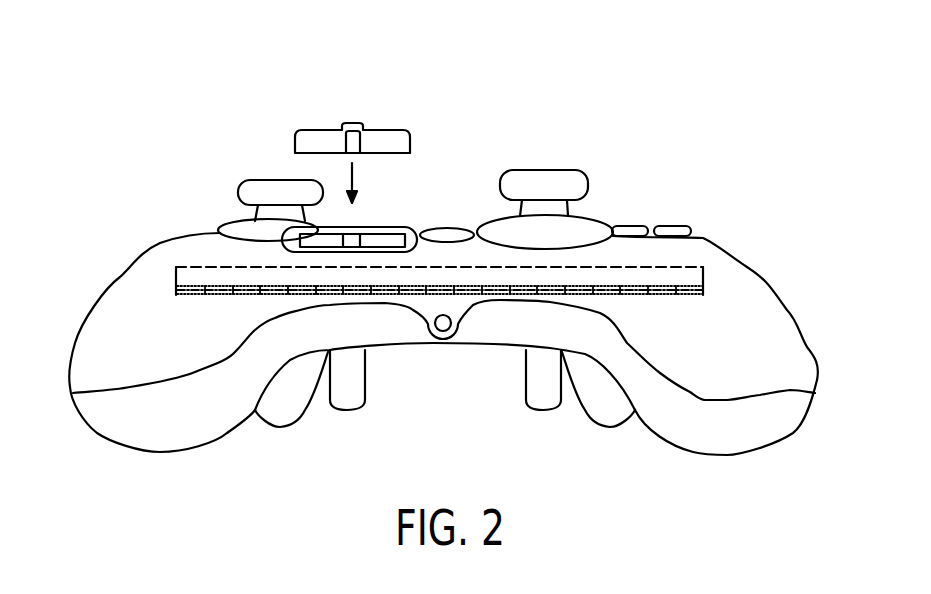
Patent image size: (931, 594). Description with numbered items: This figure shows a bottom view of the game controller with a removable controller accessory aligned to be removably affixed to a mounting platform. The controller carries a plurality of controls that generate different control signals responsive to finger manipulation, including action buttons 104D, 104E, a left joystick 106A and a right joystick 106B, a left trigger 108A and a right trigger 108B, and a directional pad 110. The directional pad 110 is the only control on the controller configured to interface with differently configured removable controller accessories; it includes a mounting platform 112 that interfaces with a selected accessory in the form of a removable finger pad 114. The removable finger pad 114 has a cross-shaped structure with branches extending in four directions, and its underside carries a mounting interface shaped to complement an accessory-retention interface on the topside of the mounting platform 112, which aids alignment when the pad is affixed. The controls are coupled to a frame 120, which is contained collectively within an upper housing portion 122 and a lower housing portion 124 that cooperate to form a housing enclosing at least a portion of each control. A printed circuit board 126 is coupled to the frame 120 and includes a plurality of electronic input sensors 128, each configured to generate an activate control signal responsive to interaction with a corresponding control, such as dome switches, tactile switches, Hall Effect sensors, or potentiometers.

The directional pad 110 is at (432, 138).
The action button 104D is at (624, 227).
The action button 104E is at (678, 227).
The left joystick 106A is at (280, 180).
The right joystick 106B is at (553, 170).
The left trigger 108A is at (343, 412).
The right trigger 108B is at (535, 412).
The mounting platform 112 is at (282, 236).
The removable finger pad 114 is at (312, 128).
The frame 120 is at (176, 272).
The upper housing portion 122 is at (121, 280).
The lower housing portion 124 is at (162, 454).
The printed circuit board 126 is at (704, 289).
The electronic input sensors 128 is at (645, 309).